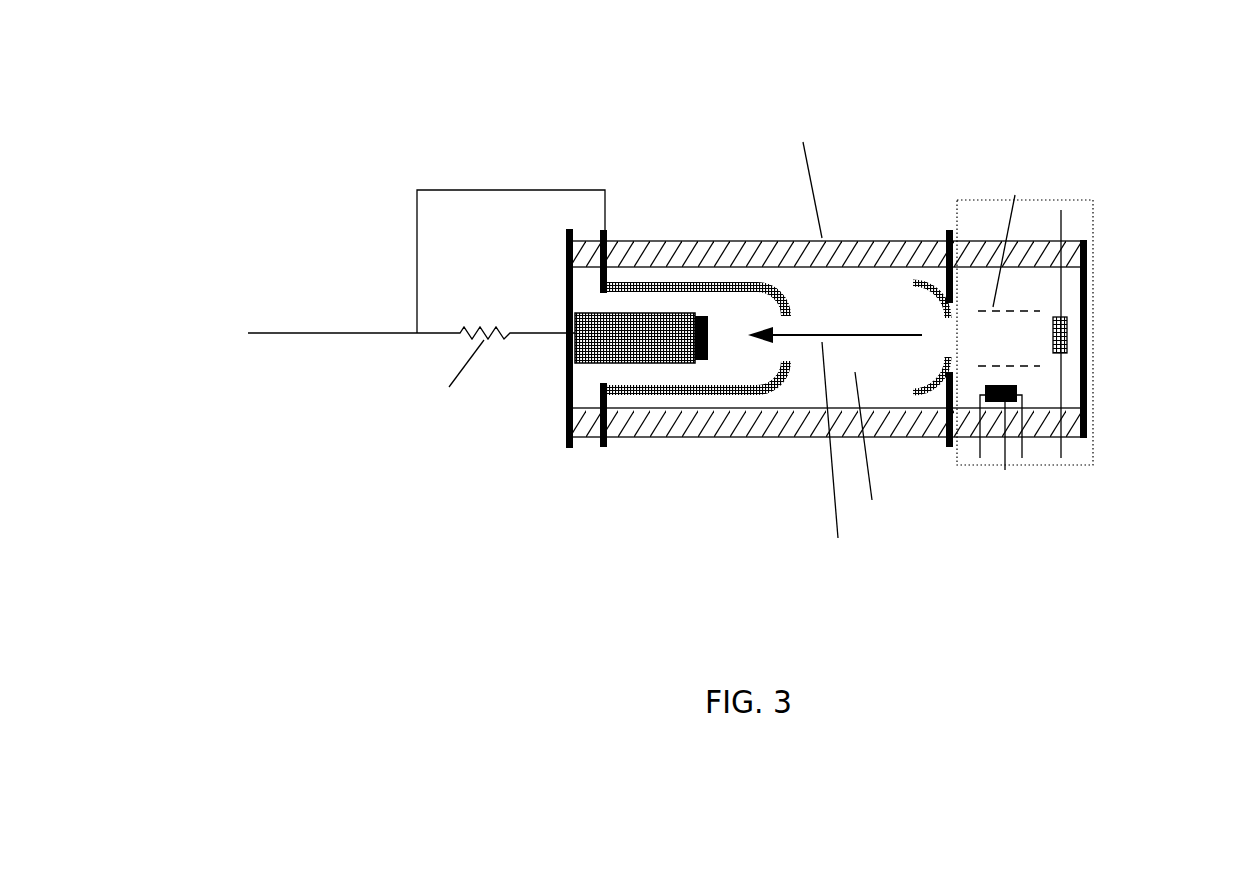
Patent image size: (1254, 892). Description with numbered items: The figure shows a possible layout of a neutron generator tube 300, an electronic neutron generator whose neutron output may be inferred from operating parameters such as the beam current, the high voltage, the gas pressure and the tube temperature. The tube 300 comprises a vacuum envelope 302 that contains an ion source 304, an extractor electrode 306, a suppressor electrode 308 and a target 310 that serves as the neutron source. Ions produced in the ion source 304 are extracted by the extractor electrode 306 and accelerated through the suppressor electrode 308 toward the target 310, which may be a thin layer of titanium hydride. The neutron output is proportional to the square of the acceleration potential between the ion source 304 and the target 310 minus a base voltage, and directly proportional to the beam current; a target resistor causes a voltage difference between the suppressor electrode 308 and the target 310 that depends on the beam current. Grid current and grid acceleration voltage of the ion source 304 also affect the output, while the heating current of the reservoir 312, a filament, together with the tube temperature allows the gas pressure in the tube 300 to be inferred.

The neutron generator tube 300 is at (291, 78).
The vacuum envelope 302 is at (680, 420).
The ion source 304 is at (1093, 385).
The extractor electrode 306 is at (920, 287).
The suppressor electrode 308 is at (658, 282).
The target 310 is at (707, 357).
The reservoir 312 is at (1065, 320).